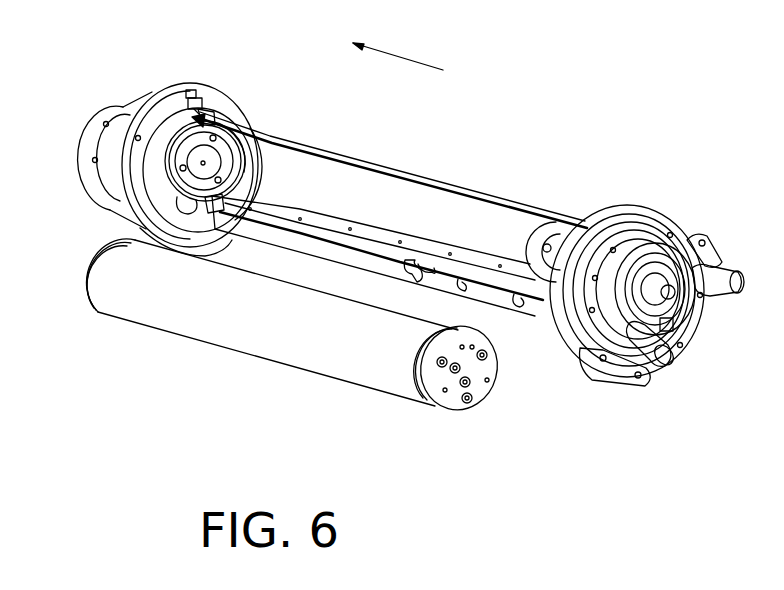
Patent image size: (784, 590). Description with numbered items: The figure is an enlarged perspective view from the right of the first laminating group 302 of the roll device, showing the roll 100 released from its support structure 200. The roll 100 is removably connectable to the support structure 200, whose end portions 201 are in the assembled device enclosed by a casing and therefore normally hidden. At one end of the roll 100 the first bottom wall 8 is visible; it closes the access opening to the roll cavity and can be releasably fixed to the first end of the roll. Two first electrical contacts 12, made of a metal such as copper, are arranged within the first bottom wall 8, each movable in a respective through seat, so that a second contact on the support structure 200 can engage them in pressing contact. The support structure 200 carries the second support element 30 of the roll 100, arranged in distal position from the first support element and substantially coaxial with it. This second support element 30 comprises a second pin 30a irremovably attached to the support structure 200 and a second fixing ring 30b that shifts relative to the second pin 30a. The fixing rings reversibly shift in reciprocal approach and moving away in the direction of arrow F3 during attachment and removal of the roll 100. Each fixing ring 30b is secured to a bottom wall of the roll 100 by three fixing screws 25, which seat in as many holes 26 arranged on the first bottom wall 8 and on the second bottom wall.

The end portions 201 is at (150, 97).
The second support element 30 is at (205, 115).
The second pin 30a is at (243, 178).
The second fixing ring 30b is at (257, 133).
The fixing screws 25 is at (183, 168).
The support structure 200 is at (452, 167).
The roll 100 is at (266, 371).
The holes 26 is at (442, 388).
The first contacts 12 is at (451, 376).
The first bottom wall 8 is at (456, 374).
The arrow F3 is at (407, 58).
The first laminating group 302 is at (118, 512).